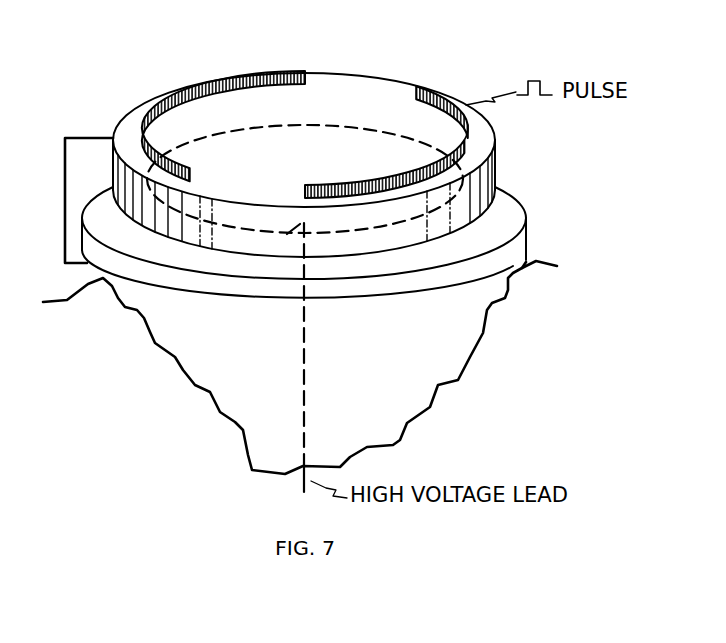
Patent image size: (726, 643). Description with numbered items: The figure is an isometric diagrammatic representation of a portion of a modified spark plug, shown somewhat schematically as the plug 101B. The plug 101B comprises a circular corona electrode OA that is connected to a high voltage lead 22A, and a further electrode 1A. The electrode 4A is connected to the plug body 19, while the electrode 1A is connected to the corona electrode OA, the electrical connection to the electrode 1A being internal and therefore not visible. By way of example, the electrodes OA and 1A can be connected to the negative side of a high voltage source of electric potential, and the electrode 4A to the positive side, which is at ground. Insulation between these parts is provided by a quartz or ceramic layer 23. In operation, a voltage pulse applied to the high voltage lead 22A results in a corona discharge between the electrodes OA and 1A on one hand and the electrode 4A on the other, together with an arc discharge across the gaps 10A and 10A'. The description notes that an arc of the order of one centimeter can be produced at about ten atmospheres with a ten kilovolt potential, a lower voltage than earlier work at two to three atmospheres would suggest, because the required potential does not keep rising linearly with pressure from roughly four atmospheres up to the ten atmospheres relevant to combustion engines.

The electrode 1A is at (436, 92).
The electrode 4A is at (214, 80).
The gap 10A is at (304, 133).
The gap 10A' is at (305, 179).
The plug body 19 is at (520, 246).
The high voltage lead 22A is at (307, 367).
The quartz or ceramic layer 23 is at (476, 151).
The plug 101B is at (534, 302).
The circular corona electrode OA is at (206, 228).